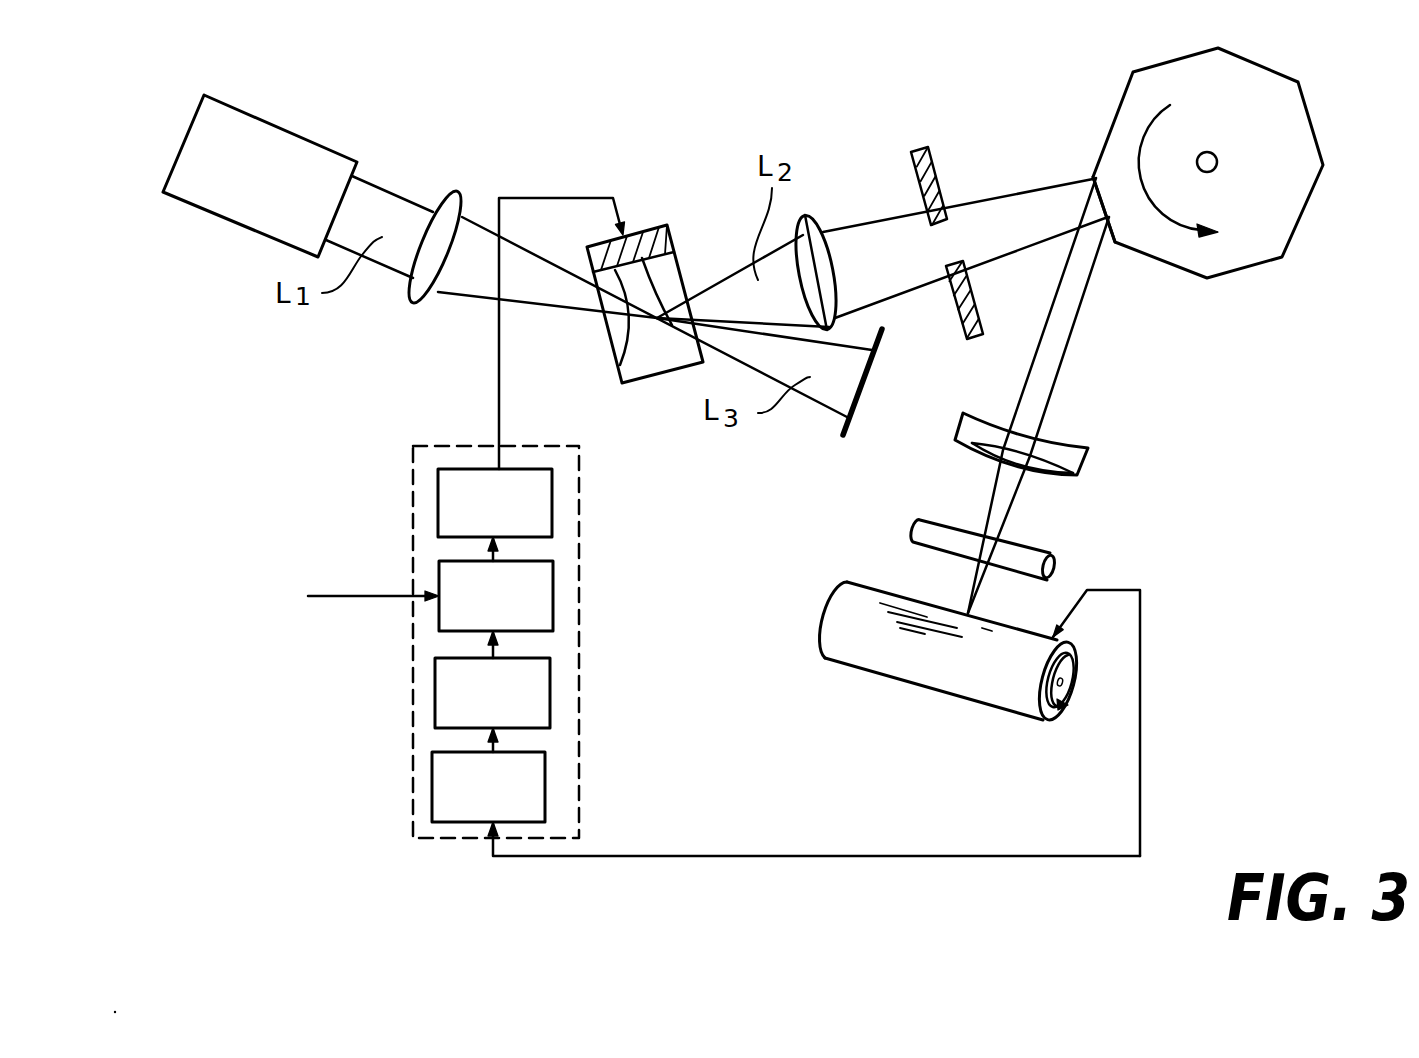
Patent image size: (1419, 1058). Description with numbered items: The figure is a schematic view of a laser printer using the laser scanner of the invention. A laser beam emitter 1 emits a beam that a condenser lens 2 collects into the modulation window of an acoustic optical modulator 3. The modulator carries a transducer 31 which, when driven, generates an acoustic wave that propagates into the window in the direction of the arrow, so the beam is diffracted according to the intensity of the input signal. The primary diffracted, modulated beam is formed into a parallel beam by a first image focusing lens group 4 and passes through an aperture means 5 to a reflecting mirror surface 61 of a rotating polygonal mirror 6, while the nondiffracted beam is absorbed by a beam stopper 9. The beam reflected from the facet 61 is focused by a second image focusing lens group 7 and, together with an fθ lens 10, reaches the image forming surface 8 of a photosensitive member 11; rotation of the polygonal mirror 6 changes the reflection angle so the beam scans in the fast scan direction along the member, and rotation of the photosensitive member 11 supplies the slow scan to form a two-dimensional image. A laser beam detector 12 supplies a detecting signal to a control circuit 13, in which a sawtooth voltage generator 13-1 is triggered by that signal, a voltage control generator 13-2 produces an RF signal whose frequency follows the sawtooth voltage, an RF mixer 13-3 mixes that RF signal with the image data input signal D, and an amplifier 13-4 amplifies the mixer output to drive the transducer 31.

The laser beam emitter 1 is at (250, 110).
The condenser lens 2 is at (452, 192).
The acoustic optical modulator 3 is at (639, 258).
The transducer 31 is at (647, 228).
The first image focusing lens group 4 is at (803, 216).
The aperture means 5 is at (912, 152).
The rotating polygonal mirror 6 is at (1177, 157).
The reflecting mirror surface (facet) 61 is at (1090, 173).
The second image focusing lens group 7 is at (1088, 450).
The image forming surface 8 is at (913, 644).
The beam stopper 9 is at (845, 432).
The fθ lens 10 is at (912, 530).
The photosensitive member 11 is at (820, 608).
The laser beam detector 12 is at (1063, 630).
The control circuit 13 is at (496, 642).
The sawtooth voltage generator 13-1 is at (545, 788).
The voltage control generator 13-2 is at (550, 697).
The RF mixer 13-3 is at (553, 603).
The amplifier 13-4 is at (552, 507).